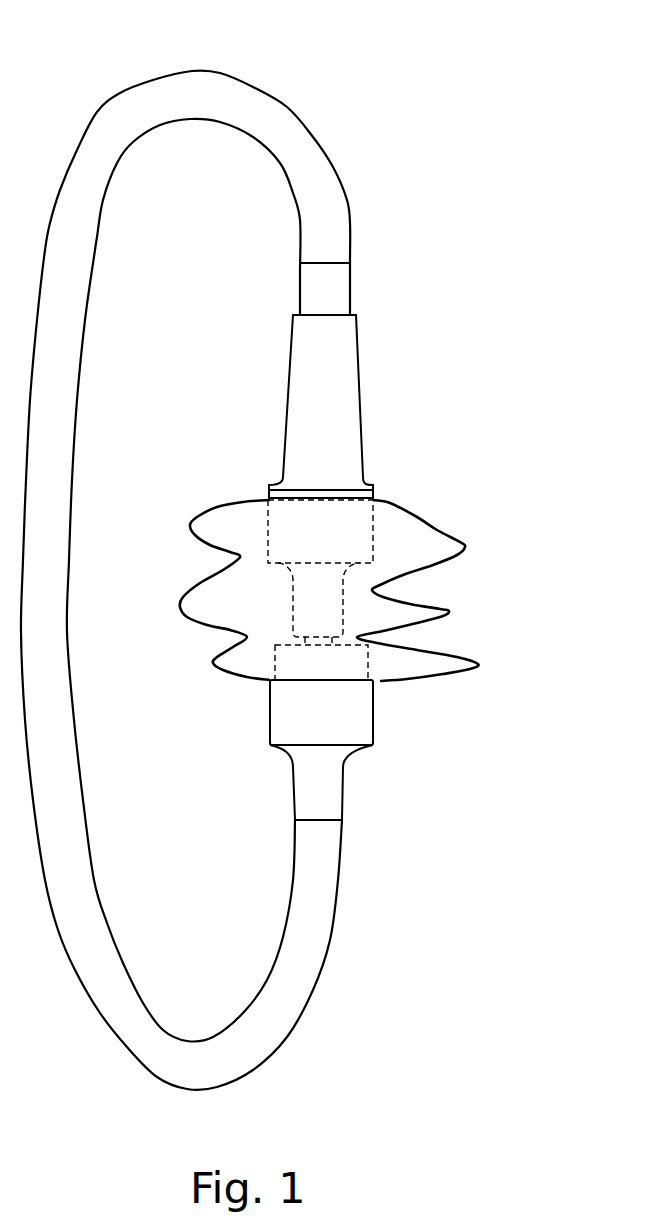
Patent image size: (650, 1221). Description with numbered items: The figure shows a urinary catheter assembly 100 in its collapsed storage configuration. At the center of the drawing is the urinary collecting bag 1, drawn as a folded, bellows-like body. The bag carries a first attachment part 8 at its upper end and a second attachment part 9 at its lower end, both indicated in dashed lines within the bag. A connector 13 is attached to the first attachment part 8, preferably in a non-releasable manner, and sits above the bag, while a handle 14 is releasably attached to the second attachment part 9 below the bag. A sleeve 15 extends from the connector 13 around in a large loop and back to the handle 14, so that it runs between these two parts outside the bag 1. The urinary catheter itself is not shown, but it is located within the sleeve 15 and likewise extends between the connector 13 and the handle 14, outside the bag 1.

The urinary catheter assembly 100 is at (441, 72).
The sleeve 15 is at (292, 133).
The connector 13 is at (345, 377).
The urinary collecting bag 1 is at (427, 523).
The first attachment part 8 is at (332, 510).
The second attachment part 9 is at (350, 662).
The handle 14 is at (353, 723).